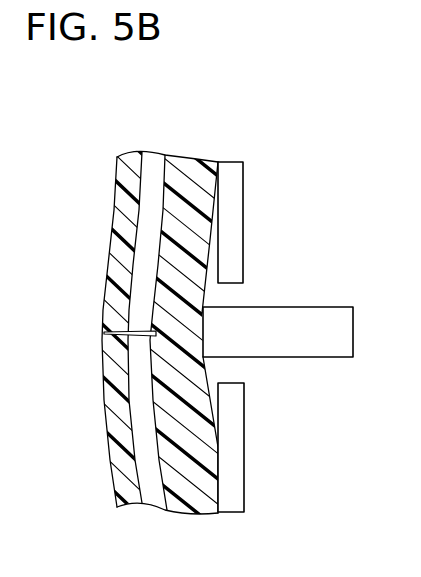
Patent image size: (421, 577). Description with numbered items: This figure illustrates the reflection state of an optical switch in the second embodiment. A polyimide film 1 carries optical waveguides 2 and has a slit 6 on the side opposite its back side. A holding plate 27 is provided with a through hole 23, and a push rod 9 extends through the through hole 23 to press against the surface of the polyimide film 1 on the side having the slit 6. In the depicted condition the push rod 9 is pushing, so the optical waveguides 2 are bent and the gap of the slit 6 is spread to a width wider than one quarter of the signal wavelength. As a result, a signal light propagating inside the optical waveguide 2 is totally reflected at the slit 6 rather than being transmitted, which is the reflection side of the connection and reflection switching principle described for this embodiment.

The polyimide film 1 is at (195, 197).
The optical waveguides 2 is at (155, 197).
The slit 6 is at (105, 333).
The push rod 9 is at (293, 333).
The through hole 23 is at (232, 373).
The holding plate 27 is at (232, 446).